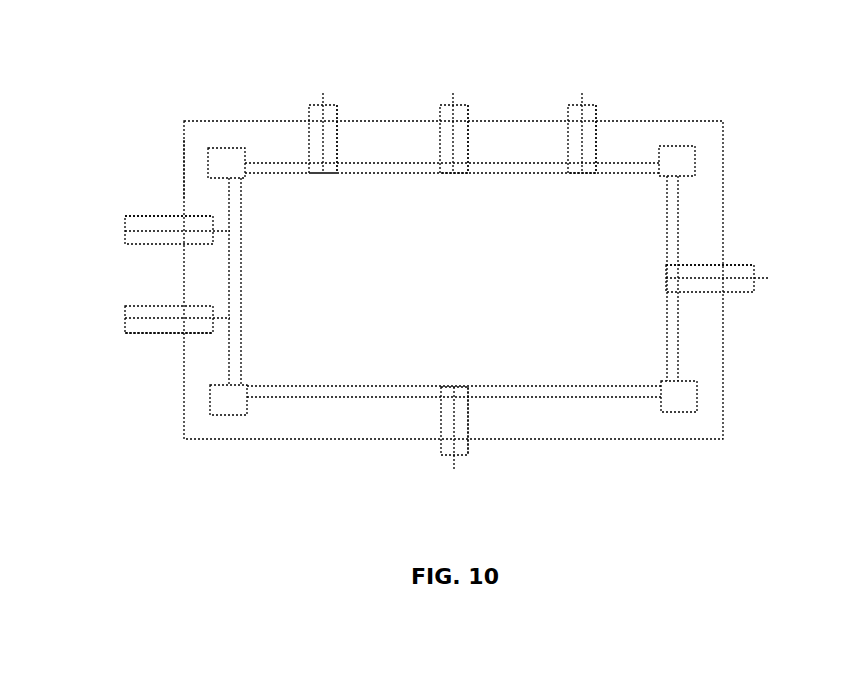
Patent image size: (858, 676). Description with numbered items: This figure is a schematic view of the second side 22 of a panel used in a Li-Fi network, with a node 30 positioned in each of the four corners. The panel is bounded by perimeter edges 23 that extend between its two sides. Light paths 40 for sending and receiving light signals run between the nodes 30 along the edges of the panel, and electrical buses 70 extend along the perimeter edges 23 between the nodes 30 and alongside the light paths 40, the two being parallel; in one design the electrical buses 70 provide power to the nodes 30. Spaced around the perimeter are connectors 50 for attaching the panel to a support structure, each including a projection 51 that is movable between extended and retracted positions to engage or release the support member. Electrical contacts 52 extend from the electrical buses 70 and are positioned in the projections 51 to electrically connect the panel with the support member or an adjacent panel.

The second side 22 is at (655, 121).
The perimeter edges 23 is at (183, 165).
The nodes 30 is at (217, 153).
The light paths 40 is at (650, 178).
The connectors 50 is at (330, 107).
The projections 51 is at (340, 108).
The electrical contacts 52 is at (322, 100).
The electrical buses 70 is at (268, 162).